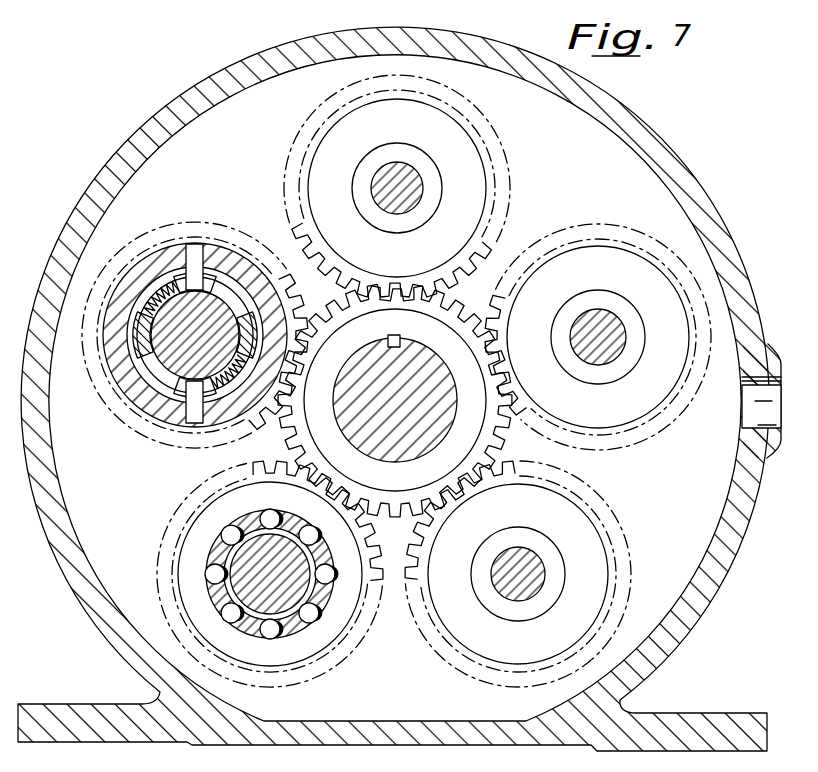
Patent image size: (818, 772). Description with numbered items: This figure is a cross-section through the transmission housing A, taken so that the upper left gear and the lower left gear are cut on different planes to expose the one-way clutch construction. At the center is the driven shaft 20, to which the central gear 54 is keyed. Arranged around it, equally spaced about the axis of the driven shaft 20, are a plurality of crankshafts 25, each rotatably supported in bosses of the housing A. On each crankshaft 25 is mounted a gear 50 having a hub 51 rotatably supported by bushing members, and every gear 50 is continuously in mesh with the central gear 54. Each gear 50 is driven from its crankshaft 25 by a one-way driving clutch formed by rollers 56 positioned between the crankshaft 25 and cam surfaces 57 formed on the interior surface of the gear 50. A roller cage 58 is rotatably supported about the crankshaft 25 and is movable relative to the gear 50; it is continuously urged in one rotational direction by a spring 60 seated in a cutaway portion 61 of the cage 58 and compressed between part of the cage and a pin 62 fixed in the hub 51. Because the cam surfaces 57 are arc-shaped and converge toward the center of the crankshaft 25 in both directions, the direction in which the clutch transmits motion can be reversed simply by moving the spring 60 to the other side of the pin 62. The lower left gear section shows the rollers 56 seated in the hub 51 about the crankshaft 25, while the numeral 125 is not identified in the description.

The housing A is at (688, 165).
The driven shaft 20 is at (438, 392).
The crankshaft 25 is at (185, 346).
The gear 50 is at (297, 306).
The hub 51 is at (152, 262).
The central gear 54 is at (296, 446).
The roller 56 is at (150, 400).
The cam surface 57 is at (137, 311).
The roller cage 58 is at (170, 341).
The spring 60 is at (212, 425).
The cutaway portion 61 is at (218, 283).
The pin 62 is at (197, 250).
The shaft 125 is at (604, 362).